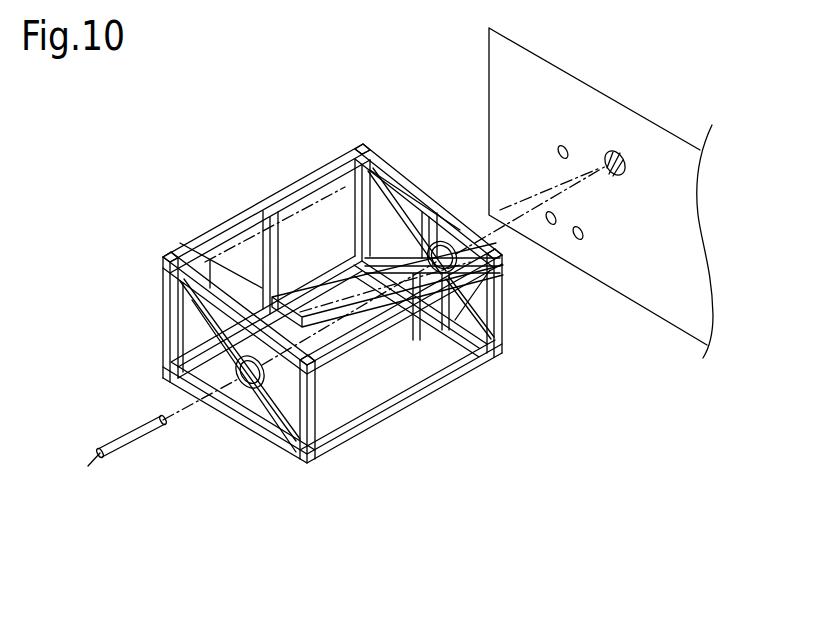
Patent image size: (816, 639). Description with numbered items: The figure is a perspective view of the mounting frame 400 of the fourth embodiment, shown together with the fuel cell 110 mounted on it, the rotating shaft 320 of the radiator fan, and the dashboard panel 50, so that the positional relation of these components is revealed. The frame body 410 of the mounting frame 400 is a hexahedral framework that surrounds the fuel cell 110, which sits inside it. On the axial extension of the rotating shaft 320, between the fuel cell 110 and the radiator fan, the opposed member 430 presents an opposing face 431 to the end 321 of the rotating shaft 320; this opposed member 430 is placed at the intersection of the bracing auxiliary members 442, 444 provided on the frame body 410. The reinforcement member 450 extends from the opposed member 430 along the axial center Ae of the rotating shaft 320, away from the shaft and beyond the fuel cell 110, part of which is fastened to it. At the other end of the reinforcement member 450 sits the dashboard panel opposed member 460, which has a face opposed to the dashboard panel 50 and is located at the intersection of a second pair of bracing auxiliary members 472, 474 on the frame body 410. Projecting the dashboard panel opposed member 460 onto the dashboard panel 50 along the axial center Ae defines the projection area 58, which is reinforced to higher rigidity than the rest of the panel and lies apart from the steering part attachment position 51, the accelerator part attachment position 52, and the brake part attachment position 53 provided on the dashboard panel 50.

The dashboard panel 50 is at (690, 101).
The steering part attachment position 51 is at (560, 151).
The accelerator part attachment position 52 is at (550, 226).
The brake part attachment position 53 is at (578, 241).
The projection area 58 is at (607, 152).
The axial center Ae is at (548, 195).
The fuel cell 110 is at (312, 225).
The rotating shaft 320 is at (132, 447).
The end of the rotating shaft 321 is at (160, 402).
The mounting frame 400 is at (270, 577).
The frame body 410 is at (383, 413).
The opposed member 430 is at (250, 393).
The opposing face 431 is at (183, 282).
The auxiliary member 442 is at (303, 387).
The auxiliary member 444 is at (285, 377).
The reinforcement member 450 is at (418, 337).
The dashboard panel opposed member 460 is at (452, 285).
The auxiliary member 472 is at (480, 318).
The auxiliary member 474 is at (500, 290).